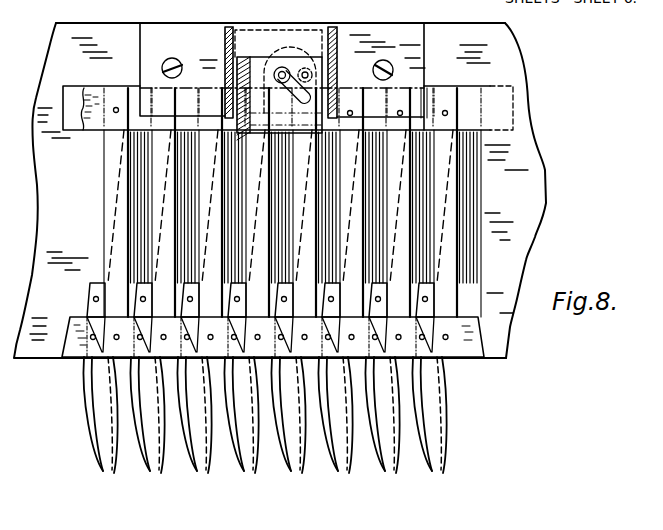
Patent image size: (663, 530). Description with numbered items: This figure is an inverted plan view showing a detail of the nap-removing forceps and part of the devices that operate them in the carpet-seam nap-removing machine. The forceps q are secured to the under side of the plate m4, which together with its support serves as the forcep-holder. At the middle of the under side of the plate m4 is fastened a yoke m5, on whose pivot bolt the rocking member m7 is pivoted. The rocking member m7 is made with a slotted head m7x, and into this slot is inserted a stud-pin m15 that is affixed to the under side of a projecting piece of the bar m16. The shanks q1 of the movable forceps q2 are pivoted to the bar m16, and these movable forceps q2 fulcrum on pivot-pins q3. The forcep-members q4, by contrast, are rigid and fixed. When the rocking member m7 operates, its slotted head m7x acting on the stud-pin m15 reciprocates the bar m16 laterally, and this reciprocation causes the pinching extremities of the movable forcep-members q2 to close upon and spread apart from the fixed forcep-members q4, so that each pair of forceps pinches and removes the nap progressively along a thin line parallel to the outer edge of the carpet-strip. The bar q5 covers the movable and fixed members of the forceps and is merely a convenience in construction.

The plate m4 is at (280, 190).
The yoke m5 is at (222, 56).
The rocking member m7 is at (245, 55).
The slotted head m7x is at (262, 67).
The stud-pin m15 is at (285, 70).
The bar m16 is at (443, 100).
The shanks q1 is at (443, 165).
The forceps q is at (264, 411).
The movable forceps q2 is at (476, 402).
The pivot-pins q3 is at (447, 340).
The forcep-members q4 is at (420, 458).
The bar q5 is at (510, 326).